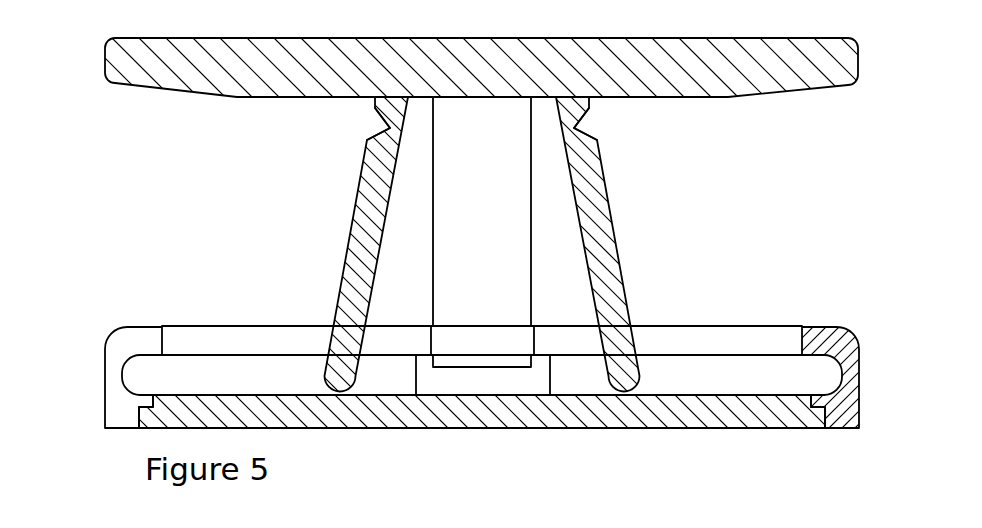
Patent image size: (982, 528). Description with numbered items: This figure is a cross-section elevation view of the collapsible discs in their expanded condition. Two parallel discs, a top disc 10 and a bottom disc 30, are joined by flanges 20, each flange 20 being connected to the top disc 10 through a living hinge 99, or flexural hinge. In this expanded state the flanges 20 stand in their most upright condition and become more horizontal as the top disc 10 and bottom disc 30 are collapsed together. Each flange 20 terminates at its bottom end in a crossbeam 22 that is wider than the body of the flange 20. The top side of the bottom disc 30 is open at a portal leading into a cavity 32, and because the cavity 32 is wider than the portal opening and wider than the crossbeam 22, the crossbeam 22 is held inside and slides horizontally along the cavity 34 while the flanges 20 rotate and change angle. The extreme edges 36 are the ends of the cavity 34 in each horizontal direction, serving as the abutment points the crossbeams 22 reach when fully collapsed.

The top disc 10 is at (128, 65).
The living hinge 99 is at (389, 128).
The flange 20 is at (358, 218).
The bottom disc 30 is at (305, 327).
The crossbeam 22 is at (330, 372).
The cavity 34 is at (197, 374).
The cavity 32 is at (445, 356).
The extreme edge 36 is at (830, 370).